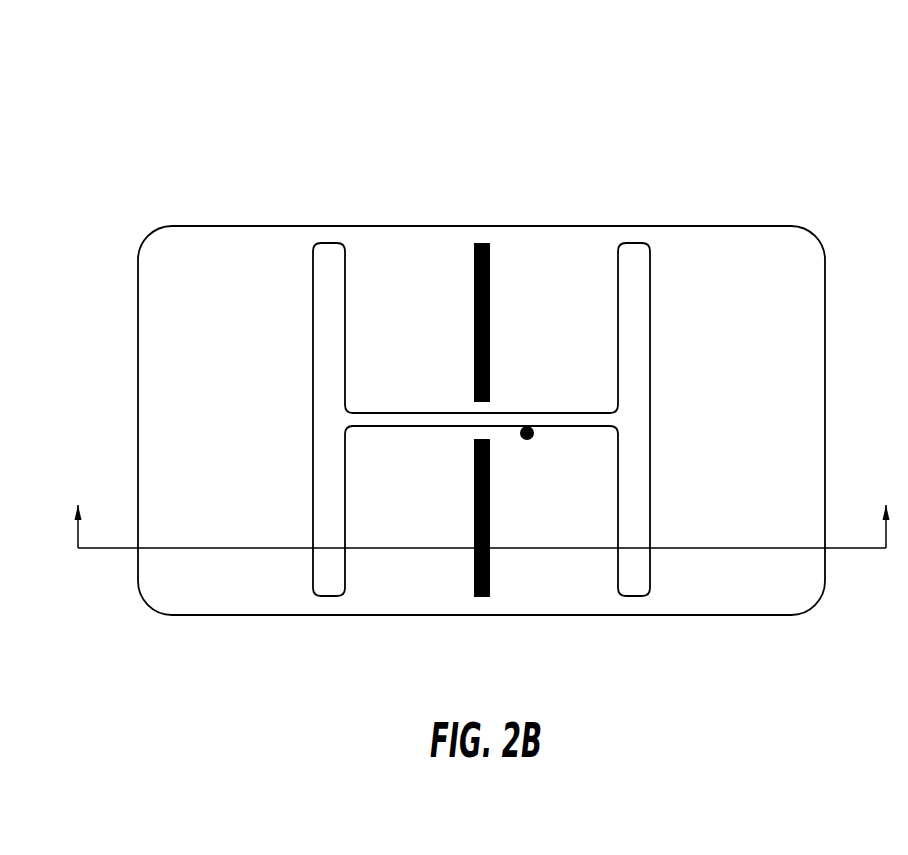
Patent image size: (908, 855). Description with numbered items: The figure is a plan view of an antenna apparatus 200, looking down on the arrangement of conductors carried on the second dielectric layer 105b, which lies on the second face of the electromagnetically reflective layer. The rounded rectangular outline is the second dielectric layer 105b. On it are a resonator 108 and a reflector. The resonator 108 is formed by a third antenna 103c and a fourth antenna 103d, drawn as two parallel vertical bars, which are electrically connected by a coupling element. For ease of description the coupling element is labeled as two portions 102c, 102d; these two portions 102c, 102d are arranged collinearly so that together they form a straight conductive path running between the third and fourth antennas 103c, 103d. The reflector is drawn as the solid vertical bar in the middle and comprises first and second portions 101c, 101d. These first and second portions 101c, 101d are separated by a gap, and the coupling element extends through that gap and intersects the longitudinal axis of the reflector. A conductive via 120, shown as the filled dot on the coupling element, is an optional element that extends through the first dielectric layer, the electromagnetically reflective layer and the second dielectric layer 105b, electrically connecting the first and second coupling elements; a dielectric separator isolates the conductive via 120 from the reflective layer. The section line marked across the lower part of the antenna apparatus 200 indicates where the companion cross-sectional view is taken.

The antenna apparatus 200 is at (840, 145).
The second dielectric layer 105b is at (826, 337).
The resonator 108 is at (670, 292).
The third antenna 103c is at (316, 453).
The fourth antenna 103d is at (650, 440).
The first portion of coupling element 102c is at (416, 413).
The second portion of coupling element 102d is at (530, 428).
The first portion of reflector 101c is at (490, 293).
The second portion of reflector 101d is at (491, 488).
The conductive via 120 is at (534, 433).